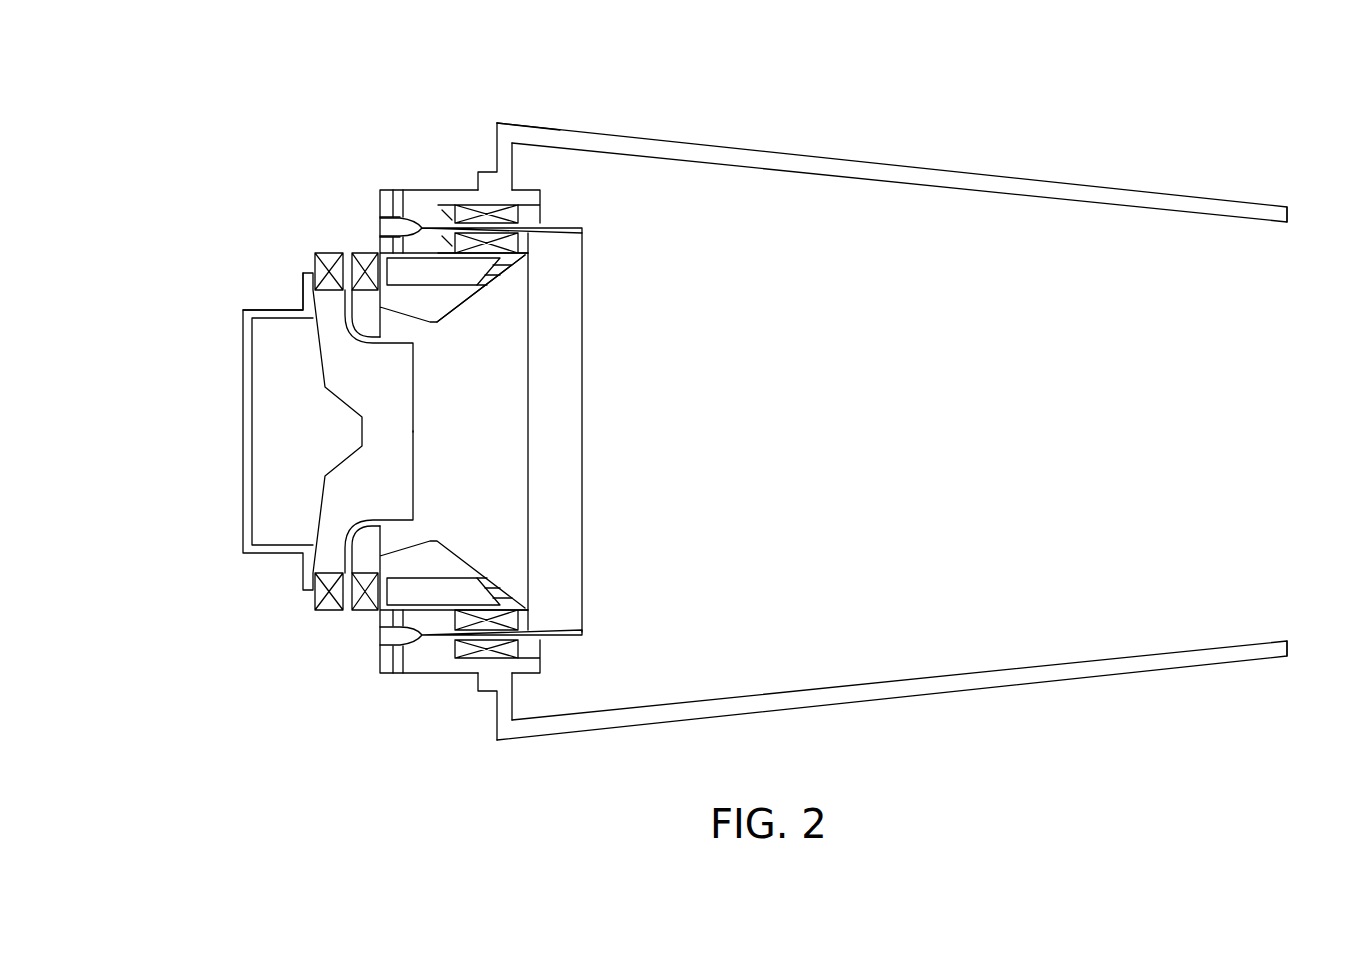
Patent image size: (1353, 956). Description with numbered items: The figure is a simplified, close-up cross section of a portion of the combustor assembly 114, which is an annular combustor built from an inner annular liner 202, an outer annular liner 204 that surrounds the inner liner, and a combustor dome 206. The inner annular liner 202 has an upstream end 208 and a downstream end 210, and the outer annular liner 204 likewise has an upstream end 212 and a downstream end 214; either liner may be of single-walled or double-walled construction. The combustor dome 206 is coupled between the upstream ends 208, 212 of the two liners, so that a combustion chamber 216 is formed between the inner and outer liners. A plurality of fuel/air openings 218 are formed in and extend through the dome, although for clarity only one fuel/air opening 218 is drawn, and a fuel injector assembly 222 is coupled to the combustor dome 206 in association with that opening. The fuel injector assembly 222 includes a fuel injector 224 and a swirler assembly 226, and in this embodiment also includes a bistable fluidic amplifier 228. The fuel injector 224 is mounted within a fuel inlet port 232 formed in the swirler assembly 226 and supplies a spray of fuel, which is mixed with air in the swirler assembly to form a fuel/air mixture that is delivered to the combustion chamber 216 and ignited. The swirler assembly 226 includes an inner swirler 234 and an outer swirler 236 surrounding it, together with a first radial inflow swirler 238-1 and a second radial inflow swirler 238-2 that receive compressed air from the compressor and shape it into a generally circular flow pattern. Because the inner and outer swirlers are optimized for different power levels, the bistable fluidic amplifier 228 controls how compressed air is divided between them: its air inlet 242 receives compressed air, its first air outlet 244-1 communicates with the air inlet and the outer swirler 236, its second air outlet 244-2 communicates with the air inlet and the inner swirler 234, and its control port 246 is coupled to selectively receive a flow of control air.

The combustor assembly 114 is at (920, 140).
The inner annular liner 202 is at (993, 670).
The outer annular liner 204 is at (993, 193).
The combustor dome 206 is at (487, 122).
The upstream end 208 is at (538, 741).
The downstream end 210 is at (1287, 657).
The upstream end 212 is at (522, 124).
The downstream end 214 is at (1287, 206).
The combustion chamber 216 is at (978, 447).
The fuel/air opening 218 is at (604, 356).
The fuel injector assembly 222 is at (272, 128).
The fuel injector 224 is at (242, 484).
The swirler assembly 226 is at (368, 197).
The bistable fluidic amplifier 228 is at (425, 208).
The fuel inlet port 232 is at (263, 310).
The inner swirler 234 is at (520, 243).
The outer swirler 236 is at (520, 215).
The first radial inflow swirler 238-1 is at (326, 611).
The second radial inflow swirler 238-2 is at (367, 611).
The air inlet 242 is at (380, 228).
The first air outlet 244-1 is at (448, 215).
The second air outlet 244-2 is at (448, 262).
The control port 246 is at (388, 200).